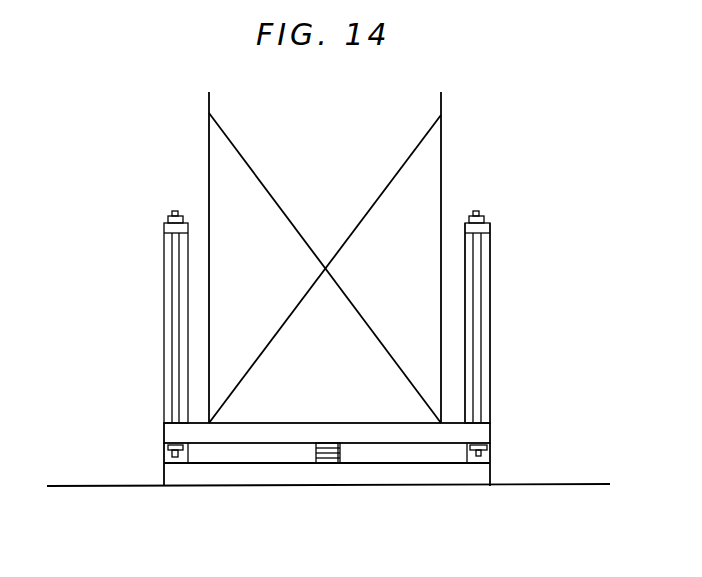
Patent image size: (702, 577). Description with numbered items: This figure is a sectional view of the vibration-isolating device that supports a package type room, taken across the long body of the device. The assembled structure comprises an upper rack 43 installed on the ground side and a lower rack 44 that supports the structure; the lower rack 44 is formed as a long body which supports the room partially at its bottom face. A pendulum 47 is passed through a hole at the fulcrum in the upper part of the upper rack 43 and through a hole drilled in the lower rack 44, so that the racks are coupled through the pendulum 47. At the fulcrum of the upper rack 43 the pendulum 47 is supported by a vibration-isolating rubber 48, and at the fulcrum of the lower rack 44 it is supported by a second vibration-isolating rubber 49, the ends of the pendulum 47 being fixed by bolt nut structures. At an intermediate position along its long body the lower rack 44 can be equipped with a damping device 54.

The upper rack 43 is at (489, 262).
The lower rack 44 is at (482, 432).
The pendulum 47 is at (480, 322).
The vibration-isolating rubber 48 is at (484, 211).
The vibration-isolating rubber 49 is at (487, 450).
The damping device 54 is at (332, 456).